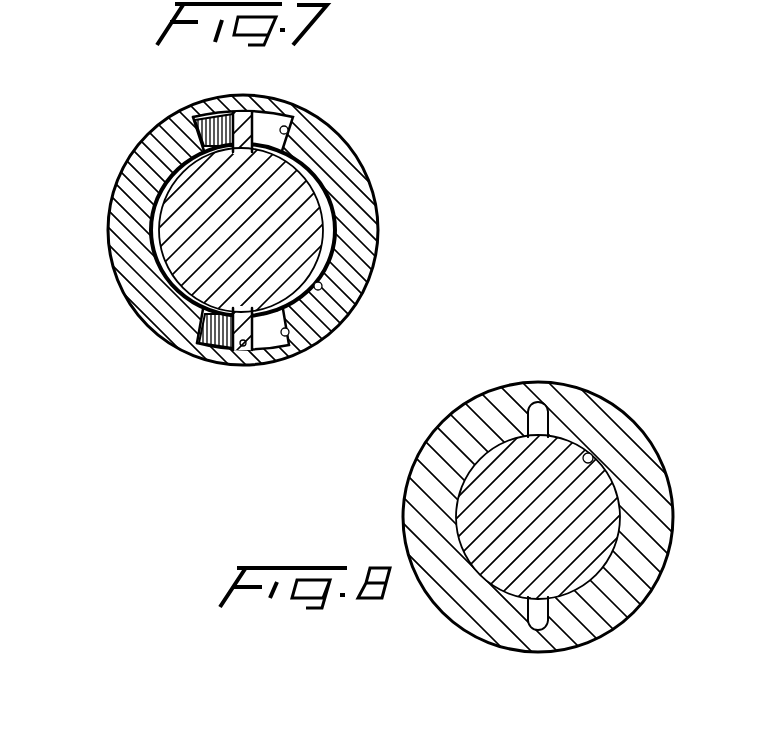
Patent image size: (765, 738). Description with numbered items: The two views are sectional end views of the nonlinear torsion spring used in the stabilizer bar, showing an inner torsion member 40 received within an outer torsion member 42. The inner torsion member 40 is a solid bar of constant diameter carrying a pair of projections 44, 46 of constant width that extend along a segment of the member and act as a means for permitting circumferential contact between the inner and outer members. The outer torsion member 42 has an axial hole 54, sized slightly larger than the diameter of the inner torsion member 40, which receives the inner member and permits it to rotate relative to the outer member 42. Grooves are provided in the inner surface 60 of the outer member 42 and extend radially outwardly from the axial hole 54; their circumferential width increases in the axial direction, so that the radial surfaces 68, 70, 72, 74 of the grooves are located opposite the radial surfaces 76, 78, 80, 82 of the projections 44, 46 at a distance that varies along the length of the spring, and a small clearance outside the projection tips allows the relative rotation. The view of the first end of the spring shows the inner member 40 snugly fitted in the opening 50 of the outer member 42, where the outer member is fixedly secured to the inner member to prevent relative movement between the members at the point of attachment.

In FIG. 7, the inner torsion member 40 is at (300, 233).
In FIG. 8, the inner torsion member 40 is at (590, 512).
In FIG. 7, the outer torsion member 42 is at (122, 227).
In FIG. 8, the outer torsion member 42 is at (420, 495).
In FIG. 7, the projection 44 is at (238, 113).
In FIG. 8, the projection 44 is at (541, 402).
In FIG. 7, the projection 46 is at (250, 352).
In FIG. 8, the projection 46 is at (542, 630).
In FIG. 8, the opening 50 is at (594, 461).
In FIG. 7, the axial hole 54 is at (163, 278).
In FIG. 7, the inner surface 60 is at (322, 283).
In FIG. 7, the radial surface 68 is at (197, 118).
In FIG. 7, the radial surface 70 is at (289, 130).
In FIG. 7, the radial surface 72 is at (206, 347).
In FIG. 7, the radial surface 74 is at (289, 338).
In FIG. 7, the radial surface 76 is at (204, 141).
In FIG. 8, the radial surface 76 is at (528, 420).
In FIG. 7, the radial surface 78 is at (252, 141).
In FIG. 8, the radial surface 78 is at (545, 416).
In FIG. 7, the radial surface 80 is at (200, 318).
In FIG. 8, the radial surface 80 is at (528, 607).
In FIG. 7, the radial surface 82 is at (283, 318).
In FIG. 8, the radial surface 82 is at (548, 614).